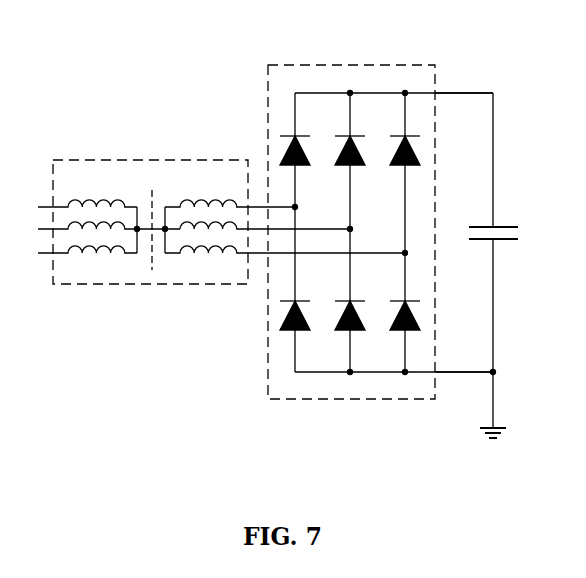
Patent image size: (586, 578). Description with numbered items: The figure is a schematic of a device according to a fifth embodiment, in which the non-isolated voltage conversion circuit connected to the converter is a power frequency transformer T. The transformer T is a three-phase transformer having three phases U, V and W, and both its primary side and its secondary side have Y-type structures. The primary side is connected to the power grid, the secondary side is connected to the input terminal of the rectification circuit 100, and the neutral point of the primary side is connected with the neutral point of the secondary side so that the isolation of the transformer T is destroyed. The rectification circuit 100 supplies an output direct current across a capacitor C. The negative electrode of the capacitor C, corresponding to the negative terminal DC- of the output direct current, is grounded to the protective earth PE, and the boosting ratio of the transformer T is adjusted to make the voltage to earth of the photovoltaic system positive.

The rectification circuit 100 is at (380, 209).
The power frequency transformer T is at (210, 202).
The phase U is at (77, 199).
The phase V is at (99, 226).
The phase W is at (76, 254).
The negative terminal DC- is at (465, 307).
The capacitor C is at (508, 232).
The protective earth PE is at (507, 405).